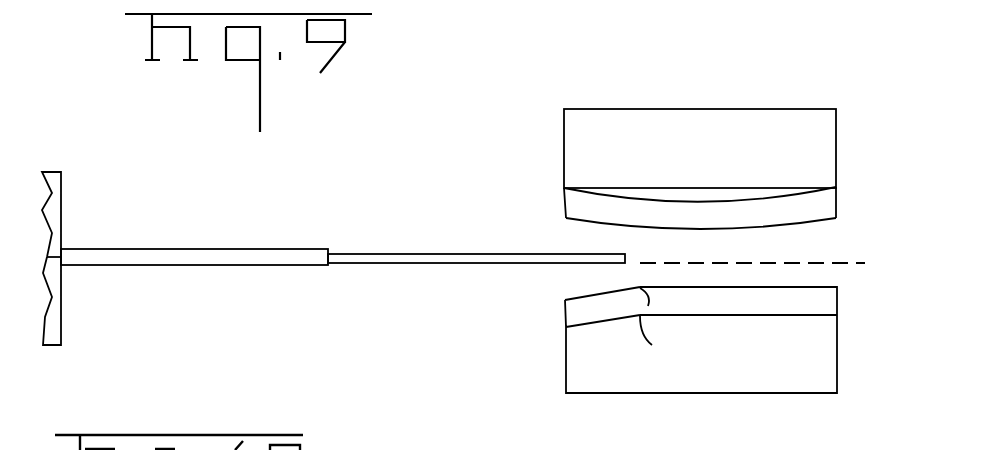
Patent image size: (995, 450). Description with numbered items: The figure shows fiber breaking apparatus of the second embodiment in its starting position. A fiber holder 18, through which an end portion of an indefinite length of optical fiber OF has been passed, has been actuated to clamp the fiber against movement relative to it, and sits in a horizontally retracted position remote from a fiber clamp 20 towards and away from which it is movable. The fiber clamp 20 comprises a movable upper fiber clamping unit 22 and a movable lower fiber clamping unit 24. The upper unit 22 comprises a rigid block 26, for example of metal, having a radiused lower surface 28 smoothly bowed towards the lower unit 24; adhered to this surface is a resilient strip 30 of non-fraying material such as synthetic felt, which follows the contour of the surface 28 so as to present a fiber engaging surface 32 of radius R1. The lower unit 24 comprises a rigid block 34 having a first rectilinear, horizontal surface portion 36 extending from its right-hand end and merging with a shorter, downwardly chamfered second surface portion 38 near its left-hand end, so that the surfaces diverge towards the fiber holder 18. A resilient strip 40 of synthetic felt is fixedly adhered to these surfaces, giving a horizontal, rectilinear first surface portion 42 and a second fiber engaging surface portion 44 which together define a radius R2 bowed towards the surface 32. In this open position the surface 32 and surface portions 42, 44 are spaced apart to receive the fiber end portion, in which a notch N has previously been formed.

The fiber holder 18 is at (70, 193).
The fiber clamp 20 is at (846, 242).
The upper fiber clamping unit 22 is at (638, 114).
The lower fiber clamping unit 24 is at (650, 325).
The rigid block 26 is at (566, 124).
The radiused lower surface 28 is at (677, 201).
The resilient strip 30 is at (577, 210).
The fiber engaging surface 32 is at (777, 226).
The block 34 is at (577, 347).
The first rectilinear horizontal surface portion 36 is at (700, 318).
The second surface portion 38 is at (603, 327).
The resilient strip 40 is at (583, 308).
The first surface portion 42 is at (789, 287).
The second fiber engaging surface portion 44 is at (608, 292).
The notch N is at (433, 255).
The optical fiber OF is at (453, 255).
The radius R1 is at (665, 228).
The radius R2 is at (645, 373).